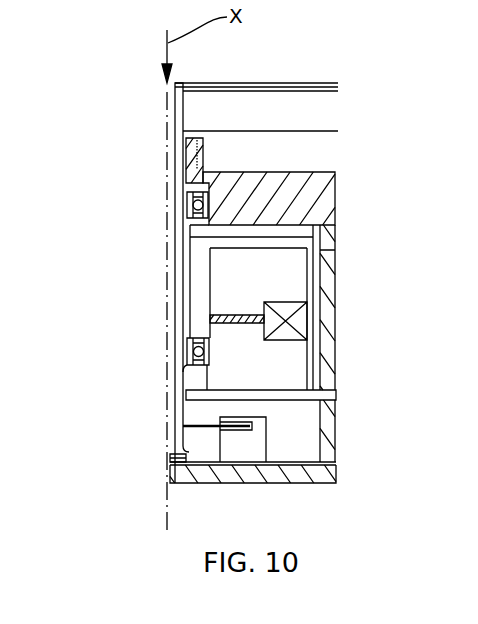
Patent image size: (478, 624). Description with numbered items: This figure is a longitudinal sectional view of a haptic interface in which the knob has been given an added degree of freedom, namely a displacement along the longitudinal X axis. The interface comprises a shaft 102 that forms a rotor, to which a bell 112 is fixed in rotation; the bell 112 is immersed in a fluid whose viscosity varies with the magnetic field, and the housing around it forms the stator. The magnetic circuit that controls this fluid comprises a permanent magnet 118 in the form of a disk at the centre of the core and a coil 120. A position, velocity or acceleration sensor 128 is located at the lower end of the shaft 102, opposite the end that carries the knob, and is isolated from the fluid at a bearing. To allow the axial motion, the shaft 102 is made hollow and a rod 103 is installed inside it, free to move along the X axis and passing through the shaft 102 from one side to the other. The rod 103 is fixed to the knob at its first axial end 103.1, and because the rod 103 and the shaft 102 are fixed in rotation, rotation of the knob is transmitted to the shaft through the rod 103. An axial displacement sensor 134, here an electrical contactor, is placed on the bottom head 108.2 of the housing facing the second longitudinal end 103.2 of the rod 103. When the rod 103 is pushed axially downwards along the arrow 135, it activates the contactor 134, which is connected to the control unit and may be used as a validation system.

The shaft 102 is at (185, 113).
The rod 103 is at (167, 252).
The first axial end 103.1 is at (173, 90).
The second longitudinal end 103.2 is at (170, 452).
The bottom head 108.2 is at (258, 476).
The bell 112 is at (277, 230).
The permanent magnet 118 is at (240, 315).
The coil 120 is at (300, 317).
The position, velocity or acceleration sensor 128 is at (268, 437).
The axial displacement sensor 134 is at (180, 465).
The arrow 135 is at (167, 50).